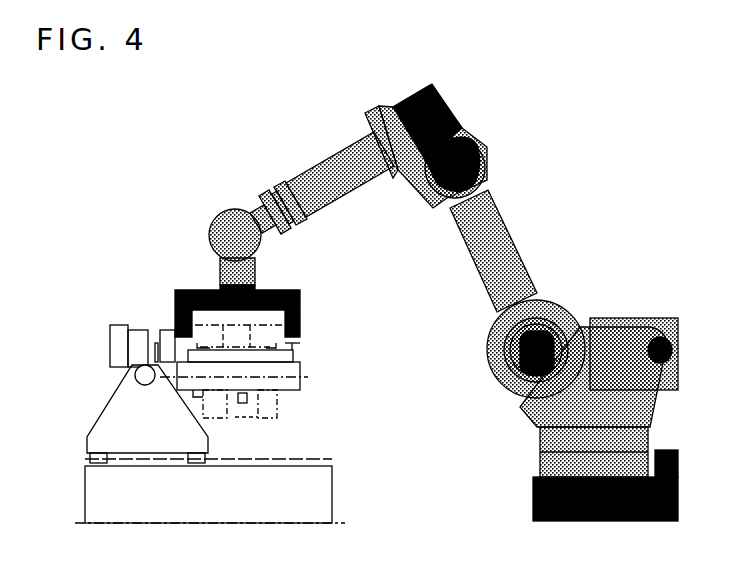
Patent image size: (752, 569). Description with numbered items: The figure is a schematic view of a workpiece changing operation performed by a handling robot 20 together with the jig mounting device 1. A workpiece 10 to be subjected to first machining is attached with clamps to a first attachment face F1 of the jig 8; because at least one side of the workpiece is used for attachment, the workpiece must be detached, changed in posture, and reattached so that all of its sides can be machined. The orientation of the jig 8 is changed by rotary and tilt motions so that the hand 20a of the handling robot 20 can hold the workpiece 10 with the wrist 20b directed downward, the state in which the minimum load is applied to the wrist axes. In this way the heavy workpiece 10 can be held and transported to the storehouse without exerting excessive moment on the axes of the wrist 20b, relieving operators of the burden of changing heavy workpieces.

The machine tool 1 is at (102, 413).
The jig 8 is at (300, 381).
The workpiece 10 is at (278, 407).
The handling robot 20 is at (548, 237).
The hand 20a is at (300, 296).
The wrist 20b is at (218, 273).
The first attachment face F1 is at (300, 354).